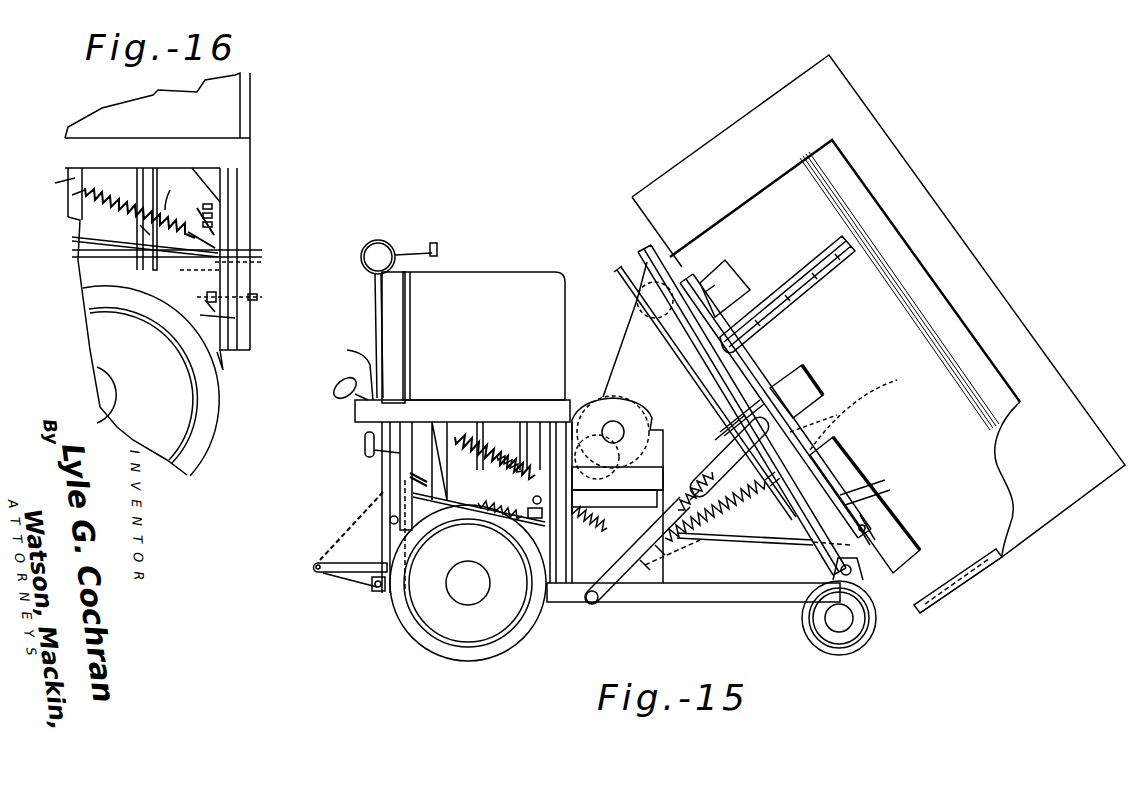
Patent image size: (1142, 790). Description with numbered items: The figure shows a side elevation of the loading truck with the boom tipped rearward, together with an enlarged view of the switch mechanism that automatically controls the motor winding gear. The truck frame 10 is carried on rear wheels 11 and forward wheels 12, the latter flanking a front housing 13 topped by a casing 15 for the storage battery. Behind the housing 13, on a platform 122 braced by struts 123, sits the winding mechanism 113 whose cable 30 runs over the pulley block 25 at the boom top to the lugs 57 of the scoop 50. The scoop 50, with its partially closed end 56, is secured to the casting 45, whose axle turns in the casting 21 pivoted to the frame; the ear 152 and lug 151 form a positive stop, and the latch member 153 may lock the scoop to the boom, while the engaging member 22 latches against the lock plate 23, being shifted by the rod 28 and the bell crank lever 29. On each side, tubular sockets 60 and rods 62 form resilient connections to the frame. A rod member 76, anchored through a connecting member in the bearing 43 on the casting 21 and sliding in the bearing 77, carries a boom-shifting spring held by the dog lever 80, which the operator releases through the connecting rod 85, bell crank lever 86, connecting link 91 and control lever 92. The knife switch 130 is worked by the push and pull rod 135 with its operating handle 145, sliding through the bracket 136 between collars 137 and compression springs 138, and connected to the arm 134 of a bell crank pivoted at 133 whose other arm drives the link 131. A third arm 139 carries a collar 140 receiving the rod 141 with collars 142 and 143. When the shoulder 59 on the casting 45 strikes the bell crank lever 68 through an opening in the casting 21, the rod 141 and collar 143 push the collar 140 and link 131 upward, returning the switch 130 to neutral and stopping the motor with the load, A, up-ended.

In FIG. 15, the frame 10 is at (693, 591).
In FIG. 15, the rear wheels 11 is at (818, 620).
In FIG. 15, the forward wheels 12 is at (468, 583).
In FIG. 16, the front housing 13 is at (252, 342).
In FIG. 15, the front housing 13 is at (440, 468).
In FIG. 15, the casing 15 is at (484, 336).
In FIG. 15, the casting 21 is at (800, 528).
In FIG. 15, the engaging member 22 is at (715, 440).
In FIG. 15, the lock plate 23 is at (720, 432).
In FIG. 15, the pulley block 25 is at (672, 338).
In FIG. 15, the rod 28 is at (373, 543).
In FIG. 15, the bell crank lever 29 is at (378, 505).
In FIG. 15, the cable 30 is at (628, 333).
In FIG. 15, the bearing 43 is at (812, 398).
In FIG. 15, the casting 45 is at (868, 542).
In FIG. 15, the scoop 50 is at (878, 334).
In FIG. 15, the partially closed end 56 is at (995, 575).
In FIG. 15, the lugs 57 is at (825, 380).
In FIG. 15, the shoulder 59 is at (860, 478).
In FIG. 15, the tubular sockets 60 is at (729, 458).
In FIG. 15, the rods 62 is at (702, 500).
In FIG. 15, the bell crank lever 68 is at (868, 512).
In FIG. 15, the rod member 76 is at (735, 512).
In FIG. 15, the bearing 77 is at (674, 560).
In FIG. 15, the dog lever 80 is at (600, 588).
In FIG. 15, the connecting rod 85 is at (382, 470).
In FIG. 15, the bell crank lever 86 is at (365, 447).
In FIG. 15, the connecting link 91 is at (374, 320).
In FIG. 15, the control lever 92 is at (362, 256).
In FIG. 15, the winding mechanism 113 is at (637, 425).
In FIG. 15, the platform 122 is at (617, 487).
In FIG. 15, the struts 123 is at (500, 440).
In FIG. 16, the knife switch 130 is at (215, 212).
In FIG. 15, the knife switch 130 is at (520, 450).
In FIG. 15, the link 131 is at (522, 440).
In FIG. 16, the pivot 133 is at (262, 270).
In FIG. 16, the arm 134 is at (262, 254).
In FIG. 15, the arm 134 is at (470, 512).
In FIG. 16, the push and pull rod 135 is at (72, 195).
In FIG. 15, the push and pull rod 135 is at (350, 352).
In FIG. 16, the bracket 136 is at (140, 225).
In FIG. 15, the bracket 136 is at (472, 415).
In FIG. 16, the collars 137 is at (87, 190).
In FIG. 15, the collars 137 is at (470, 430).
In FIG. 16, the compression springs 138 is at (78, 230).
In FIG. 15, the compression springs 138 is at (496, 470).
In FIG. 15, the third arm 139 is at (535, 528).
In FIG. 16, the collar 140 is at (245, 318).
In FIG. 15, the collar 140 is at (547, 520).
In FIG. 16, the rod 141 is at (262, 310).
In FIG. 15, the rod 141 is at (730, 540).
In FIG. 16, the collar 142 is at (200, 318).
In FIG. 15, the collar 142 is at (492, 518).
In FIG. 16, the collar 143 is at (262, 294).
In FIG. 15, the collar 143 is at (545, 522).
In FIG. 15, the operating handle 145 is at (332, 388).
In FIG. 15, the lug 151 is at (740, 350).
In FIG. 15, the ear 152 is at (712, 328).
In FIG. 15, the latch member 153 is at (533, 514).
In FIG. 15, the bin body A is at (1039, 460).